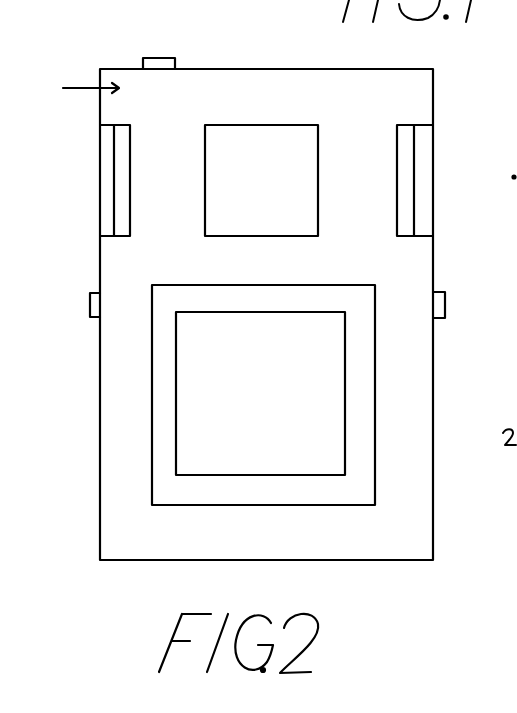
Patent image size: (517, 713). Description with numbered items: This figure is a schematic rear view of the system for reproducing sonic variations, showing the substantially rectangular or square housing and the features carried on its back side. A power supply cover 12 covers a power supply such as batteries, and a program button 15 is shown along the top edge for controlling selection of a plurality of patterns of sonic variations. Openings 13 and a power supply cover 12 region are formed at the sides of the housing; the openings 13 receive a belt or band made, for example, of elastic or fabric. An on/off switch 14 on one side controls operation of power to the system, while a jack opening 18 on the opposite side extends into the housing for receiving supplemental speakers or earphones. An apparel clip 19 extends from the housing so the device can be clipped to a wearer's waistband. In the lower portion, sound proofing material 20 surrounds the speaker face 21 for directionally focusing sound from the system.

The power supply cover 12 is at (448, 177).
The openings 13 is at (83, 176).
The on/off switch 14 is at (455, 314).
The program buttons 15 is at (168, 51).
The jack opening 18 is at (77, 308).
The apparel clip 19 is at (241, 208).
The sound proofing material 20 is at (153, 439).
The speaker face 21 is at (236, 384).